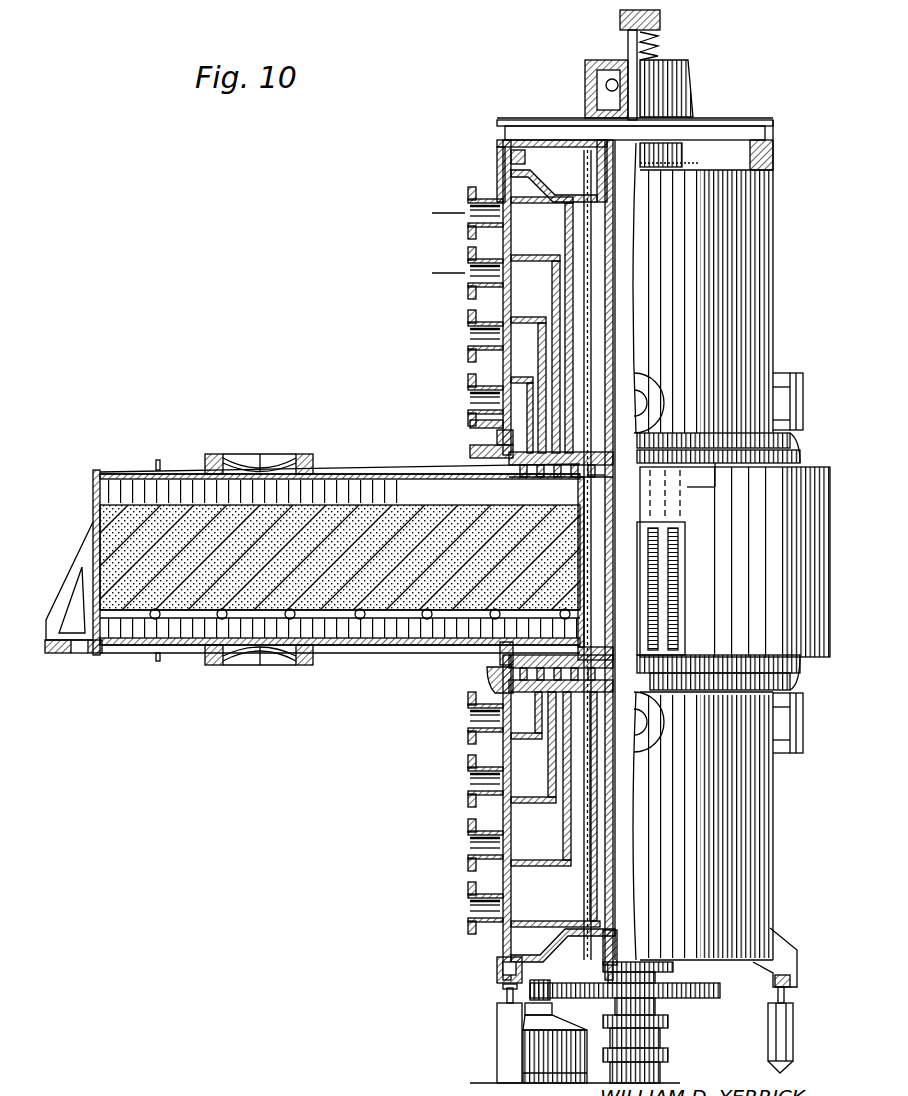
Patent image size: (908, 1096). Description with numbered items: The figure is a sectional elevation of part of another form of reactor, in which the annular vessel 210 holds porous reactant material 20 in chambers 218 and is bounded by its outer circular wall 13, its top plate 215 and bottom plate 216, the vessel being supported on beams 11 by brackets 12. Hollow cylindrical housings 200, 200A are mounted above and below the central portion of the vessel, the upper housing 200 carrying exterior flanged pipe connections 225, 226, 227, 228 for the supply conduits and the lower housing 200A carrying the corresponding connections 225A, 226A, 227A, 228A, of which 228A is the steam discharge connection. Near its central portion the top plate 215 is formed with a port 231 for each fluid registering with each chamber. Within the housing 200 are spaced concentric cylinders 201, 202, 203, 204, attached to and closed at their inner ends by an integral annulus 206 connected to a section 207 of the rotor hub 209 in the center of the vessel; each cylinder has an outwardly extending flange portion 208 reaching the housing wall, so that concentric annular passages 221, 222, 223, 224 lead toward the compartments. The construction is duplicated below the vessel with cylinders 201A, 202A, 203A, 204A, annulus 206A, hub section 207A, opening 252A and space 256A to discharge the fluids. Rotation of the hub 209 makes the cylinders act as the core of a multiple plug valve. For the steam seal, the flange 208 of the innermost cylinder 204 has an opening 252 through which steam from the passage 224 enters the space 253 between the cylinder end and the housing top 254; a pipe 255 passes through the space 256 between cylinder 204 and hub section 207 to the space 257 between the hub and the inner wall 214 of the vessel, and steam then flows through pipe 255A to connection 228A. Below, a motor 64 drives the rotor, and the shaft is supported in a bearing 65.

The porous reactant material 20 is at (162, 503).
The vessel 210 is at (325, 466).
The top plate 215 is at (367, 474).
The chambers 218 is at (347, 632).
The bottom plate 216 is at (410, 642).
The outer circular wall 13 is at (102, 517).
The brackets 12 is at (451, 463).
The beams 11 is at (452, 398).
The port 231 is at (512, 480).
The annular passage 221 is at (503, 420).
The annular passage 222 is at (445, 398).
The flanged pipe connection 225 is at (512, 410).
The flanged pipe connection 226 is at (470, 352).
The flanged pipe connection 227 is at (470, 290).
The flanged pipe connection 228 is at (470, 228).
The space 253 is at (498, 170).
The top of cylindrical housing 254 is at (527, 175).
The opening 252 is at (555, 200).
The bearing 65 is at (660, 1038).
The motor 64 is at (645, 1033).
The hollow cylindrical housing 200 is at (753, 279).
The integral annulus 206 is at (642, 443).
The hub section 207 is at (612, 388).
The space 256 is at (598, 378).
The rotor hub 209 is at (612, 515).
The space 257 is at (593, 502).
The inner wall 214 is at (655, 576).
The integral annulus 206A is at (625, 650).
The hollow cylindrical housing 200A is at (753, 794).
The concentric cylinder 201A is at (527, 723).
The flange portion 208 is at (535, 252).
The pipe 255 is at (566, 285).
The annular passage 224 is at (548, 302).
The annular passage 223 is at (543, 322).
The concentric cylinder 204 is at (540, 340).
The concentric cylinder 203 is at (545, 367).
The concentric cylinder 202 is at (532, 397).
The concentric cylinder 201 is at (513, 410).
The flanged pipe connection 225A is at (472, 738).
The flanged pipe connection 226A is at (470, 805).
The flanged pipe connection 227A is at (470, 866).
The discharge connection 228A is at (490, 912).
The opening 252A is at (533, 923).
The concentric cylinder 202A is at (540, 770).
The hub section 207A is at (612, 770).
The pipe 255A is at (587, 793).
The space 256A is at (592, 823).
The concentric cylinder 204A is at (573, 840).
The concentric cylinder 203A is at (557, 853).